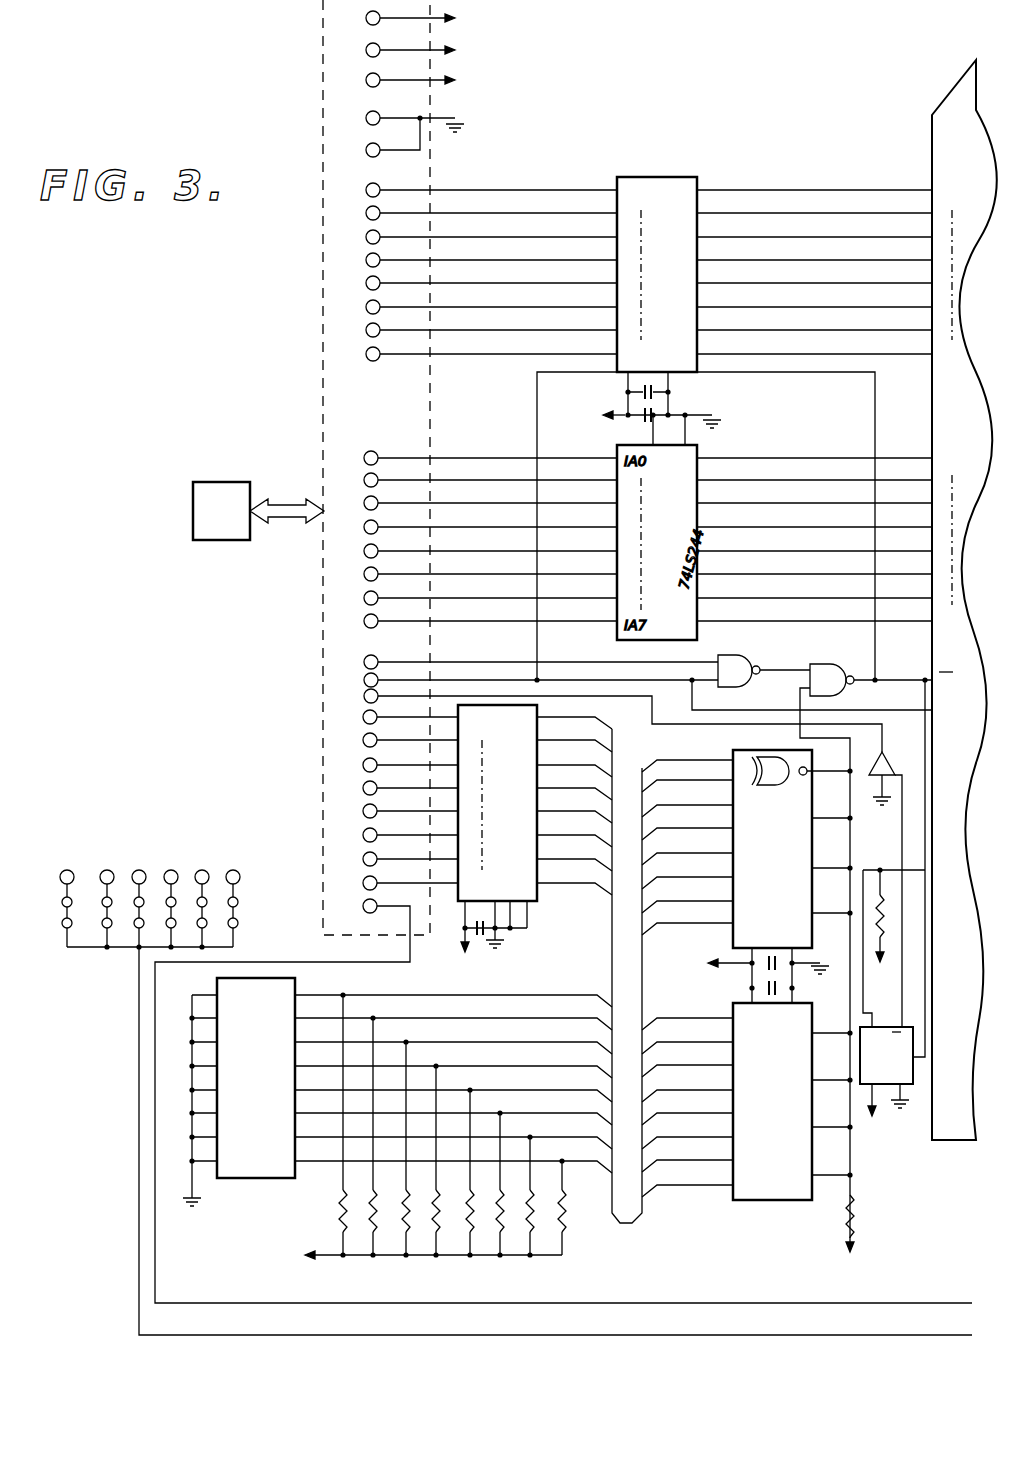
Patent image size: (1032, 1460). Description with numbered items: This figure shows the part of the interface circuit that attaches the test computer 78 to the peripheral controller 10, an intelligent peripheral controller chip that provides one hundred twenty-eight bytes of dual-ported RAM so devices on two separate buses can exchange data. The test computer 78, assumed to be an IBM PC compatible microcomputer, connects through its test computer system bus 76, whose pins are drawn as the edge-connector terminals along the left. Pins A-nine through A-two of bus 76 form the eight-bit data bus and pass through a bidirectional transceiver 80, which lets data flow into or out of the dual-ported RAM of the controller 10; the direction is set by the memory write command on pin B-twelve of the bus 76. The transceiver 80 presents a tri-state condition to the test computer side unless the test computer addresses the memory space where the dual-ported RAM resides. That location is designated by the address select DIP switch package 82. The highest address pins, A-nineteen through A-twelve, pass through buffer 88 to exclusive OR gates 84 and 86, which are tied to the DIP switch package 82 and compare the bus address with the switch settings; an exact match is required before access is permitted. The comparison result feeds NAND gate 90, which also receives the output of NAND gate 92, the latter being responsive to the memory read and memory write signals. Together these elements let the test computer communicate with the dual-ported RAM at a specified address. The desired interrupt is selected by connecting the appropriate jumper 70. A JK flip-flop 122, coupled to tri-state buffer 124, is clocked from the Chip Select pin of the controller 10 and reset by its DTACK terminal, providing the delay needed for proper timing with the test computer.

The peripheral controller 10 is at (926, 116).
The jumper 70 is at (160, 825).
The test computer system bus 76 is at (320, 398).
The test computer 78 is at (230, 522).
The bidirectional transceiver 80 is at (684, 165).
The address select DIP switch package 82 is at (262, 1056).
The exclusive OR gate 84 is at (775, 864).
The exclusive OR gate 86 is at (775, 1104).
The buffer 88 is at (537, 893).
The NAND gate 90 is at (833, 689).
The NAND gate 92 is at (742, 680).
The JK flip-flop 122 is at (913, 1072).
The tri-state buffer 124 is at (879, 758).